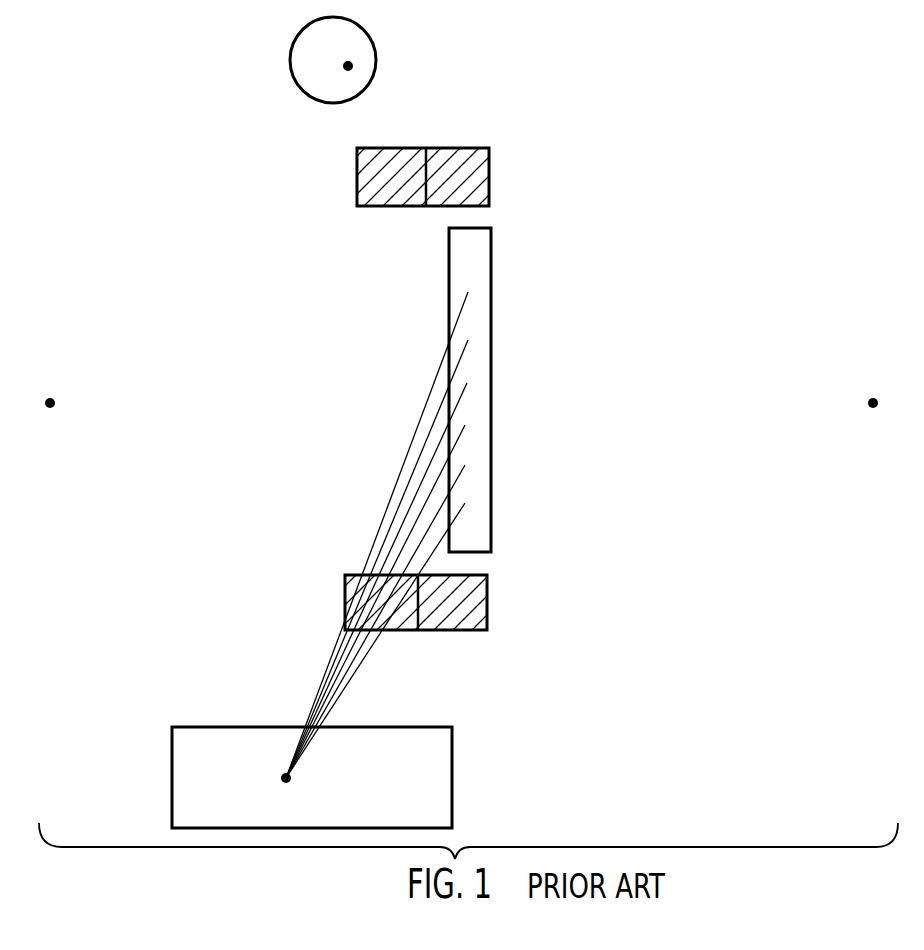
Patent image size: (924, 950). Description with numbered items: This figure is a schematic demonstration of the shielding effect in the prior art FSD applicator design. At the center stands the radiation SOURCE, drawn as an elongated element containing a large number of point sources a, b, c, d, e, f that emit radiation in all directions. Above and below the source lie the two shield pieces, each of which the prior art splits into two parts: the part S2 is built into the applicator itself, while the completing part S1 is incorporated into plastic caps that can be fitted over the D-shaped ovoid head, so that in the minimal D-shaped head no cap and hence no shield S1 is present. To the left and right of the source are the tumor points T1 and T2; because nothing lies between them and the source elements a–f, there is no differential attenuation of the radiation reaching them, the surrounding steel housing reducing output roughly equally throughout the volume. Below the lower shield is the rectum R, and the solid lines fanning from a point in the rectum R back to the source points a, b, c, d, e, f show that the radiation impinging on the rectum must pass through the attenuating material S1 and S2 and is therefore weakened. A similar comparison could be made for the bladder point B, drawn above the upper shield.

The bladder point B is at (333, 60).
The completing shield part S1 is at (353, 213).
The built-in shield part S2 is at (502, 199).
The radiation source SOURCE is at (488, 438).
The point source a is at (381, 522).
The point source b is at (381, 546).
The point source c is at (380, 567).
The point source d is at (381, 588).
The point source e is at (381, 608).
The point source f is at (379, 629).
The tumor point T1 is at (57, 381).
The tumor point T2 is at (883, 382).
The rectum R is at (312, 777).